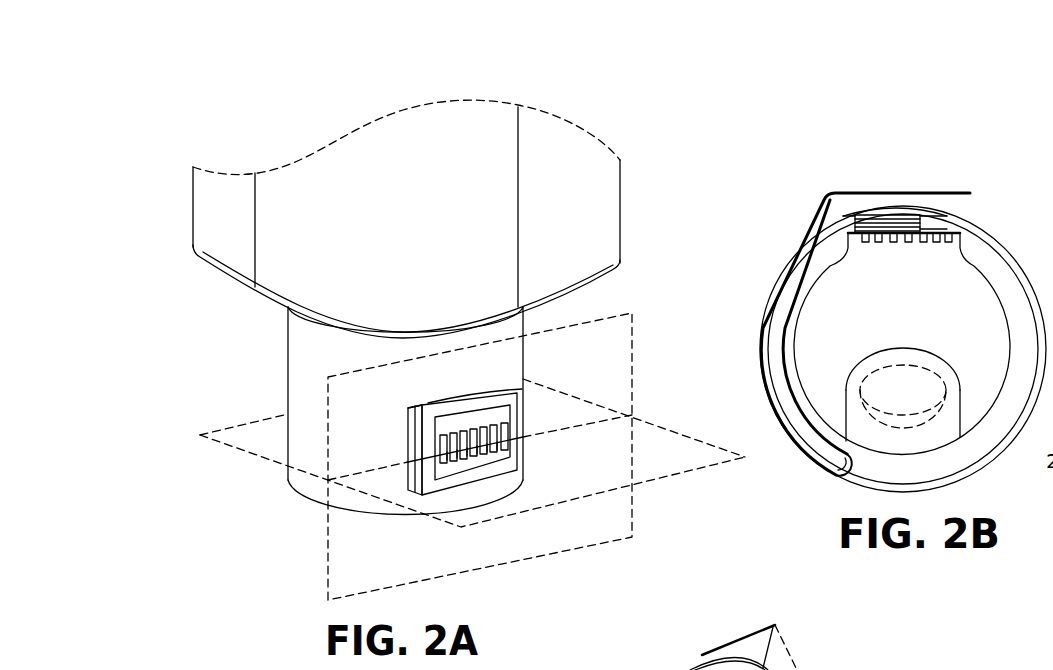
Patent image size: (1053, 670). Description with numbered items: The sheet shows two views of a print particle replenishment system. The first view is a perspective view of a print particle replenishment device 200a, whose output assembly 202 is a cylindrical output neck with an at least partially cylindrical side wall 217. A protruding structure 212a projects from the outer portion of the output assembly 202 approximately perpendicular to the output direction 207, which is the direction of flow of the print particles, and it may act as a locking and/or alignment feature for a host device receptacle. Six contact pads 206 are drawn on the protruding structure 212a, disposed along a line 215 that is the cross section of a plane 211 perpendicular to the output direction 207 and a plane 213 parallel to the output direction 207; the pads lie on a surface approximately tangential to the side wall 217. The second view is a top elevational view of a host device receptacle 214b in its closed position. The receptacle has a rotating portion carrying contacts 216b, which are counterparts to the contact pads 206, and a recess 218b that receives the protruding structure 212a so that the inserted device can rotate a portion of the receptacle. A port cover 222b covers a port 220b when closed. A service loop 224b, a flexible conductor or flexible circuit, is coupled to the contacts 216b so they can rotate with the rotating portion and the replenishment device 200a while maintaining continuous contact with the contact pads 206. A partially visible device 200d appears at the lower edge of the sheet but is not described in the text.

In FIG. 2A, the print particle replenishment device 200a is at (183, 153).
In FIG. 2A, the output assembly 202 is at (253, 306).
In FIG. 2A, the contact pads 206 is at (524, 436).
In FIG. 2A, the output direction 207 is at (435, 528).
In FIG. 2A, the plane 211 is at (650, 423).
In FIG. 2A, the protruding structure 212a is at (410, 477).
In FIG. 2A, the plane 213 is at (633, 508).
In FIG. 2A, the line 215 is at (543, 436).
In FIG. 2A, the side wall 217 is at (463, 385).
In FIG. 2B, the host device receptacle 214b is at (797, 199).
In FIG. 2B, the contacts 216b is at (953, 224).
In FIG. 2B, the recess 218b is at (964, 272).
In FIG. 2B, the port 220b is at (940, 386).
In FIG. 2B, the port cover 222b is at (874, 353).
In FIG. 2B, the service loop 224b is at (810, 241).
In FIG. 2B, the electronic device (partial view) 200d is at (728, 645).